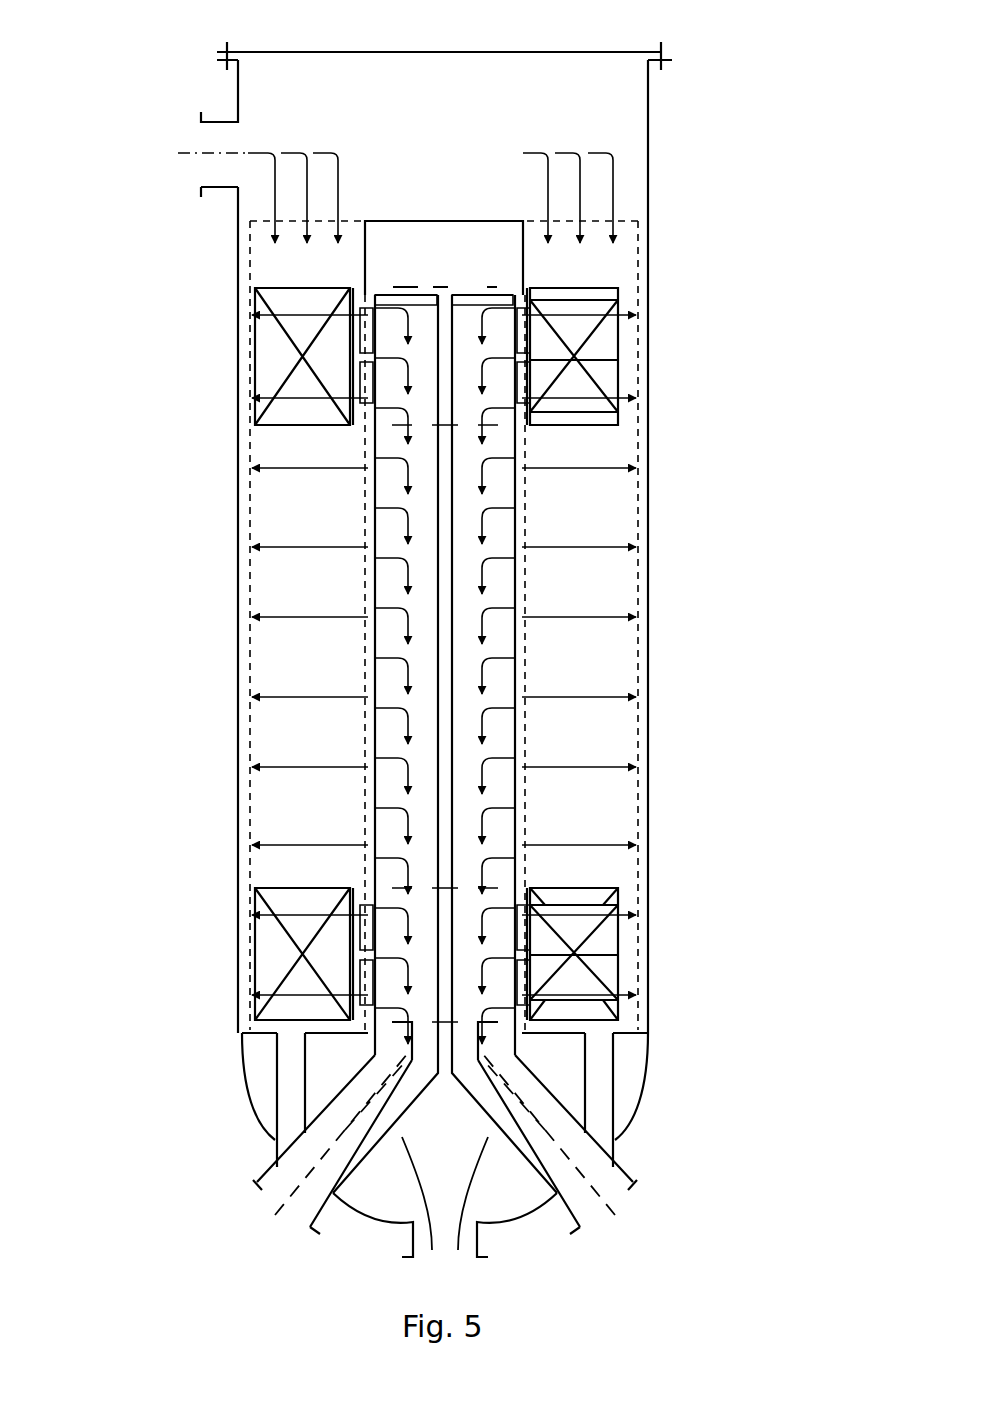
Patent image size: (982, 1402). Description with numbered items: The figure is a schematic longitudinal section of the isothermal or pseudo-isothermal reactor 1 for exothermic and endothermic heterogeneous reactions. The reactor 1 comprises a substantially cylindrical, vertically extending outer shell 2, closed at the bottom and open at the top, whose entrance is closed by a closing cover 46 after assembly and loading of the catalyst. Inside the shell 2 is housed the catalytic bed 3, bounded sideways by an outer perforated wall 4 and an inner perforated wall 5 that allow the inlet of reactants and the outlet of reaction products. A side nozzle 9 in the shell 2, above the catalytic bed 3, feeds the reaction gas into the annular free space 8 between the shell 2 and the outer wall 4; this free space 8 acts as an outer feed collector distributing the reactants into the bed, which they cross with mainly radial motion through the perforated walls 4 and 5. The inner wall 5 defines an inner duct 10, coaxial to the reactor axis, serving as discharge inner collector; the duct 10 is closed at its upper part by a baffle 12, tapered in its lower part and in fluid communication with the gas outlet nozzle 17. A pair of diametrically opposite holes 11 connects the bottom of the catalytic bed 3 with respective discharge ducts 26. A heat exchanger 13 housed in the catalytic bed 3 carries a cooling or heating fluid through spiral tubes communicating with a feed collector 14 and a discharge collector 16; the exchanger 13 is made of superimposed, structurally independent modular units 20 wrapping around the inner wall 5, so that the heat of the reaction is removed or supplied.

The isothermal reactor 1 is at (150, 68).
The outer shell 2 is at (648, 192).
The catalytic bed 3 is at (337, 267).
The outer perforated wall 4 is at (623, 235).
The inner perforated wall 5 is at (527, 240).
The annular free space 8 is at (640, 508).
The side nozzle 9 is at (213, 186).
The inner duct 10 is at (484, 713).
The holes 11 is at (270, 1033).
The baffle 12 is at (430, 220).
The heat exchanger 13 is at (585, 432).
The feed collector 14 is at (418, 297).
The discharge collector 16 is at (474, 297).
The gas outlet nozzle 17 is at (483, 1238).
The modular units 20 is at (605, 340).
The discharge ducts 26 is at (602, 1088).
The closing cover 46 is at (658, 50).